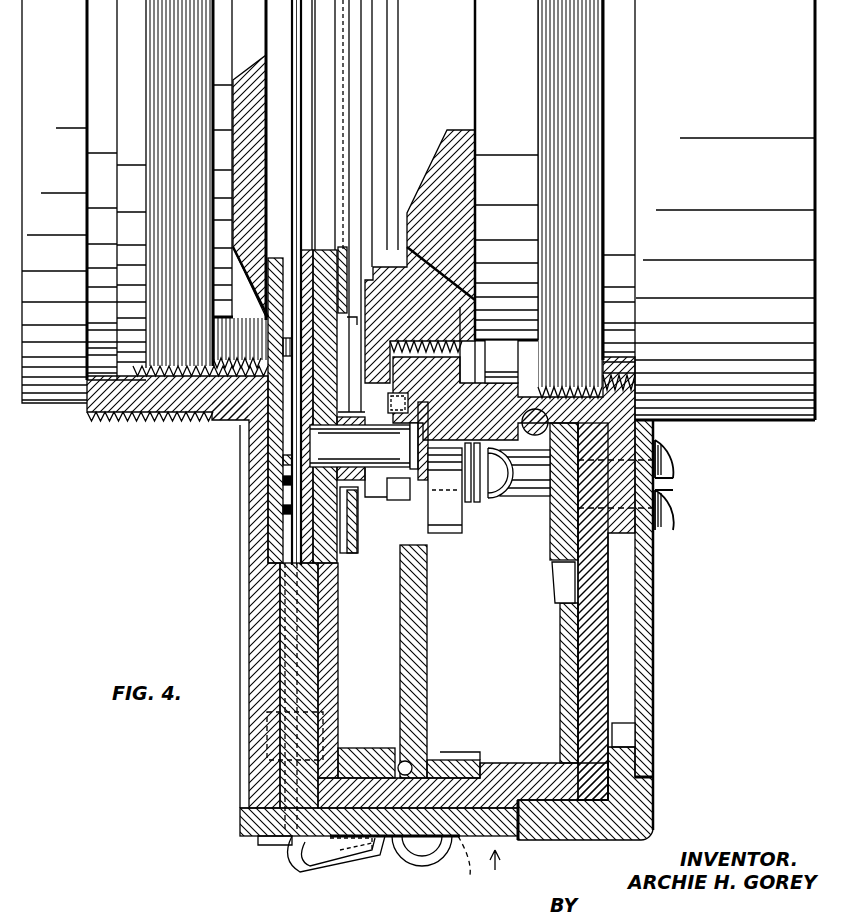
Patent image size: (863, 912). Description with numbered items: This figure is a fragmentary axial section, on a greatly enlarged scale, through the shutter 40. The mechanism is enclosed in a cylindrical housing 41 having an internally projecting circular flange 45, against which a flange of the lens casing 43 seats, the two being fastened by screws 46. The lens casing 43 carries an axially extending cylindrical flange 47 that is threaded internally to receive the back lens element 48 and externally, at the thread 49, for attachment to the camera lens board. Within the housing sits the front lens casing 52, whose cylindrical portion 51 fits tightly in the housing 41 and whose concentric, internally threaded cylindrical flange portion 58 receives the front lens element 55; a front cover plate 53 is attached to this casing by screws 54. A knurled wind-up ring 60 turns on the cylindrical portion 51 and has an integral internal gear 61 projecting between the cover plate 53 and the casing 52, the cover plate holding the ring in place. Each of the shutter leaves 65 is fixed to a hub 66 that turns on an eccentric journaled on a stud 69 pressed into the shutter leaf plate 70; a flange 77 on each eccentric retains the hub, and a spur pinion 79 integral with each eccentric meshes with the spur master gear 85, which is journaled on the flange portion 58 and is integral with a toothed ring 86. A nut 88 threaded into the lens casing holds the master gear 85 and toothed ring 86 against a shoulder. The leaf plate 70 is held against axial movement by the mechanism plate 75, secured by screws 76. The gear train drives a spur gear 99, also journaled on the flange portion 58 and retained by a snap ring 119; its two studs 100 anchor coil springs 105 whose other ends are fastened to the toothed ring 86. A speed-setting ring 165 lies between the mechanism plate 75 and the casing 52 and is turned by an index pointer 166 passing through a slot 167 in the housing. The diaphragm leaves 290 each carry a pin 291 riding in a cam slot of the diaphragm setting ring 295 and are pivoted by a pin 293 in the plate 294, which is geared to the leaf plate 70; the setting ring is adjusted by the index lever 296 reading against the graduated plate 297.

The shutter 40 is at (497, 873).
The housing 41 is at (505, 838).
The lens casing 43 is at (250, 650).
The circular flange 45 is at (305, 678).
The screws 46 is at (262, 766).
The cylindrical flange 47 is at (227, 414).
The back lens element 48 is at (60, 383).
The external thread 49 is at (167, 418).
The cylindrical portion 51 is at (527, 785).
The front lens casing 52 is at (580, 588).
The front cover plate 53 is at (645, 597).
The screws 54 is at (676, 497).
The front lens element 55 is at (720, 408).
The cylindrical flange portion 58 is at (506, 191).
The wind-up ring 60 is at (647, 815).
The internal gear 61 is at (620, 722).
The shutter leaves 65 is at (343, 192).
The hub 66 is at (358, 527).
The stud 69 is at (375, 458).
The shutter leaf plate 70 is at (333, 625).
The mechanism plate 75 is at (420, 670).
The screws 76 is at (366, 748).
The flange 77 is at (362, 267).
The spur pinion 79 is at (400, 492).
The spur master gear 85 is at (410, 403).
The toothed ring 86 is at (446, 522).
The nut 88 is at (418, 302).
The spur gear 99 is at (556, 548).
The studs 100 is at (535, 496).
The coil spring 105 is at (478, 502).
The snap ring 119 is at (548, 420).
The speed-setting ring 165 is at (572, 672).
The index pointer 166 is at (418, 860).
The slot 167 is at (470, 855).
The diaphragm leaves 290 is at (300, 258).
The pin 291 is at (283, 343).
The pivot pin 293 is at (290, 503).
The plate 294 is at (283, 480).
The diaphragm setting ring 295 is at (290, 460).
The index lever 296 is at (306, 866).
The graduated plate 297 is at (270, 842).